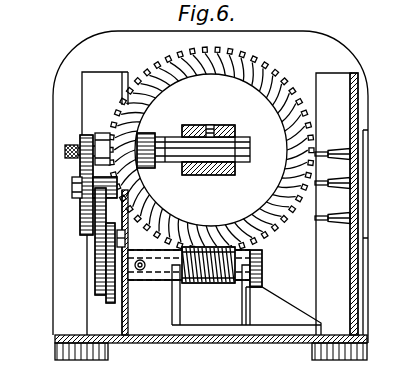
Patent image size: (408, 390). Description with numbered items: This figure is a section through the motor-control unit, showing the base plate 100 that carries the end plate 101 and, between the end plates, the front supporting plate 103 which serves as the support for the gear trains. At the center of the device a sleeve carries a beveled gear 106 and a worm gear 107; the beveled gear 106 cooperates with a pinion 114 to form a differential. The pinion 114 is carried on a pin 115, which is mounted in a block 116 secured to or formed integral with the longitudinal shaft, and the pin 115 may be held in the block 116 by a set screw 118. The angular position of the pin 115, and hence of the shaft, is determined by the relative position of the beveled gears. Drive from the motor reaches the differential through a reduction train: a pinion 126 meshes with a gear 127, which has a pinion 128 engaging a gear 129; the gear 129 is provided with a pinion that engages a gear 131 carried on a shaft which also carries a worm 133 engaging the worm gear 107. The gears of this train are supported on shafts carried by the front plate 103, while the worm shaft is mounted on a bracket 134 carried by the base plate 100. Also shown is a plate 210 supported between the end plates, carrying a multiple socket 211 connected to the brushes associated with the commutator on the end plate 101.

The base plate 100 is at (212, 343).
The end plate 101 is at (341, 58).
The front supporting plate 103 is at (127, 312).
The beveled gear 106 is at (276, 93).
The worm gear 107 is at (249, 62).
The pinion 114 is at (139, 171).
The pin 115 is at (248, 150).
The block 116 is at (211, 175).
The set screw 118 is at (210, 126).
The pinion 126 is at (66, 149).
The gear 127 is at (84, 226).
The pinion 128 is at (72, 190).
The gear 129 is at (96, 275).
The gear 131 is at (109, 304).
The worm 133 is at (216, 285).
The bracket 134 is at (274, 302).
The plate 210 is at (357, 108).
The multiple socket 211 is at (353, 183).